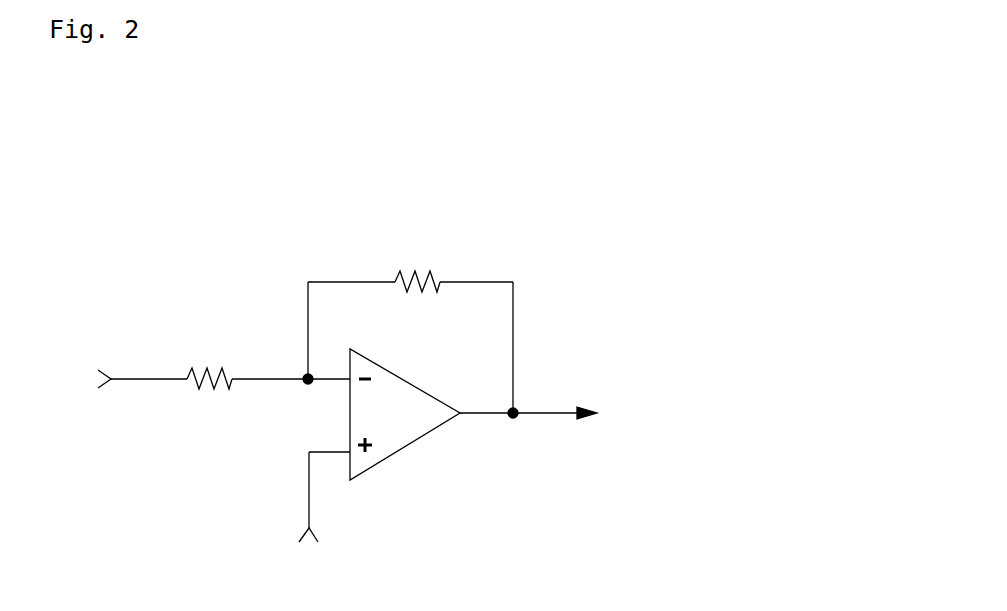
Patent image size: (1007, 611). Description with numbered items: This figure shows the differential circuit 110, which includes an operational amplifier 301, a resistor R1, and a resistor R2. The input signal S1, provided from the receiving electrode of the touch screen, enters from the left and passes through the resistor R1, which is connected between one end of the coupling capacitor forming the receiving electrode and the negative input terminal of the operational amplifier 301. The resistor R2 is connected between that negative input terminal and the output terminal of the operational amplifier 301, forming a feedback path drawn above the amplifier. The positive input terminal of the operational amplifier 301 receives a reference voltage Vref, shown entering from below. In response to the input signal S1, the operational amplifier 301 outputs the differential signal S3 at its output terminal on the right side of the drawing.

The differential circuit 110 is at (348, 338).
The operational amplifier 301 is at (404, 378).
The resistor R1 is at (209, 359).
The resistor R2 is at (417, 262).
The input signal S1 is at (121, 378).
The differential signal S3 is at (547, 414).
The reference voltage Vref is at (323, 518).